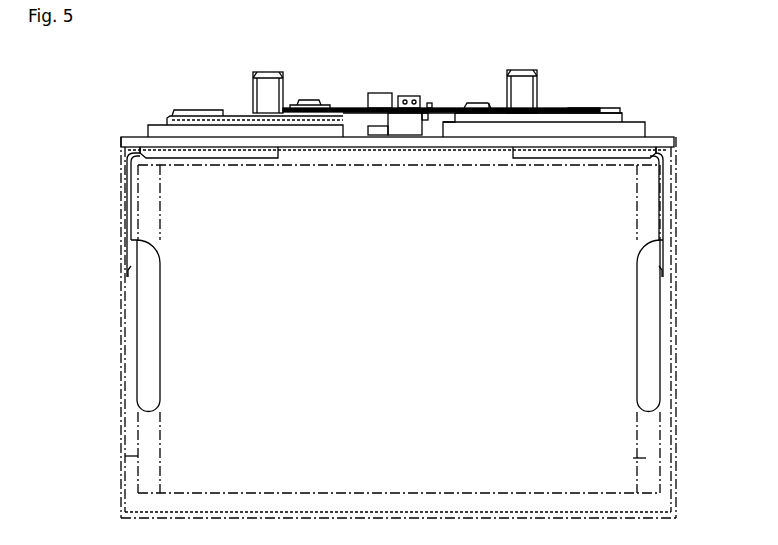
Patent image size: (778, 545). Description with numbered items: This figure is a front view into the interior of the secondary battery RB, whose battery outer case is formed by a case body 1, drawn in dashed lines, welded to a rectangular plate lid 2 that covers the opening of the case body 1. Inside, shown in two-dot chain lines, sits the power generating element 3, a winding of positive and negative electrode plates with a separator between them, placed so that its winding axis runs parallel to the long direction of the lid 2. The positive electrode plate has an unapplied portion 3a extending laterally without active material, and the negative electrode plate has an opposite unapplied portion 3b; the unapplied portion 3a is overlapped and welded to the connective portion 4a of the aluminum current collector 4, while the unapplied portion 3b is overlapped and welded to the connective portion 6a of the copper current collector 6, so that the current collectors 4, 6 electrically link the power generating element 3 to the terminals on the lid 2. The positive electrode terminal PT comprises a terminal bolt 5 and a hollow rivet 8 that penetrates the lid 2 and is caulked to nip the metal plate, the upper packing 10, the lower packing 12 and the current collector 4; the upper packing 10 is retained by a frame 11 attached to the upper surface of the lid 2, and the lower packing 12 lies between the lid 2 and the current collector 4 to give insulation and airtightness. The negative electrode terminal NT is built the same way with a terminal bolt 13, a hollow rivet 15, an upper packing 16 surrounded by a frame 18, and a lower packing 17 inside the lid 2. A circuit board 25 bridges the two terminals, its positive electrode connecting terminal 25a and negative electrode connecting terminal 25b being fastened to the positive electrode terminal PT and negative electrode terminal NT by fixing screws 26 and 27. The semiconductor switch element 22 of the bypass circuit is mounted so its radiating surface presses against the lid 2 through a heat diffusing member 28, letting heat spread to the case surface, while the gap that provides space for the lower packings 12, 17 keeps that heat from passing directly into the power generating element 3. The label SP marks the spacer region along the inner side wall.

The case body 1 is at (122, 343).
The lid 2 is at (672, 137).
The power generating element 3 is at (345, 494).
The unapplied portion 3a is at (125, 456).
The unapplied portion 3b is at (633, 458).
The current collector 4 is at (166, 326).
The connective portion 4a is at (158, 312).
The terminal bolt 5 is at (253, 93).
The current collector 6 is at (632, 326).
The connective portion 6a is at (635, 268).
The hollow rivet 8 is at (203, 108).
The upper packing 10 is at (167, 118).
The frame 11 is at (148, 130).
The lower packing 12 is at (268, 160).
The terminal bolt 13 is at (538, 84).
The hollow rivet 15 is at (590, 108).
The upper packing 16 is at (645, 124).
The lower packing 17 is at (508, 160).
The frame 18 is at (445, 134).
The semiconductor switch element 22 is at (388, 120).
The circuit board 25 is at (438, 106).
The positive electrode connecting terminal 25a is at (327, 103).
The negative electrode connecting terminal 25b is at (470, 103).
The fixing screw 26 is at (307, 100).
The fixing screw 27 is at (489, 103).
The heat diffusing member 28 is at (400, 136).
The secondary battery RB is at (142, 78).
The positive electrode terminal PT is at (217, 78).
The negative electrode terminal NT is at (577, 78).
The spacer SP is at (138, 210).